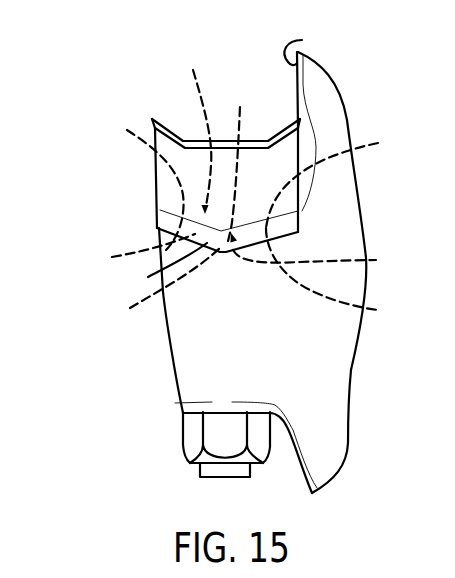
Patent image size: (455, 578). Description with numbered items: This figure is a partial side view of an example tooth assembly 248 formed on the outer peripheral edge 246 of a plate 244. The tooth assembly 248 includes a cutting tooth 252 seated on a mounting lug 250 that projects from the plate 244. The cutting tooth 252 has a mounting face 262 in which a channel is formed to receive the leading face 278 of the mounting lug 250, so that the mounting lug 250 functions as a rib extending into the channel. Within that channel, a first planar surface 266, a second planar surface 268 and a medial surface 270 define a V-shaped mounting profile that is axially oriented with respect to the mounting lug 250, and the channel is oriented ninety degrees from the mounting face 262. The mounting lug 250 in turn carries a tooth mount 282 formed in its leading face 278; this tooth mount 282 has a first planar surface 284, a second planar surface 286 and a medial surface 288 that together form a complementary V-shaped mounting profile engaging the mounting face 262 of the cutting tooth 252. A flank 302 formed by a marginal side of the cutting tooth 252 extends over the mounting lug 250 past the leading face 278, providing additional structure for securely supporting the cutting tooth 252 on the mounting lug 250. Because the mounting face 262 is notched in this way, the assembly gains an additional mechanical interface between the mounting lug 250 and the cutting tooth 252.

The plate 244 is at (363, 199).
The outer peripheral edge 246 is at (302, 40).
The tooth assembly 248 is at (135, 82).
The mounting lug 250 is at (153, 364).
The cutting tooth 252 is at (146, 171).
The mounting face 262 is at (192, 127).
The first planar surface 266 is at (132, 180).
The second planar surface 268 is at (343, 178).
The medial surface 270 is at (248, 163).
The leading face 278 is at (344, 276).
The tooth mount 282 is at (147, 220).
The first planar surface 284 is at (132, 252).
The second planar surface 286 is at (329, 262).
The medial surface 288 is at (156, 290).
The flank 302 is at (158, 268).